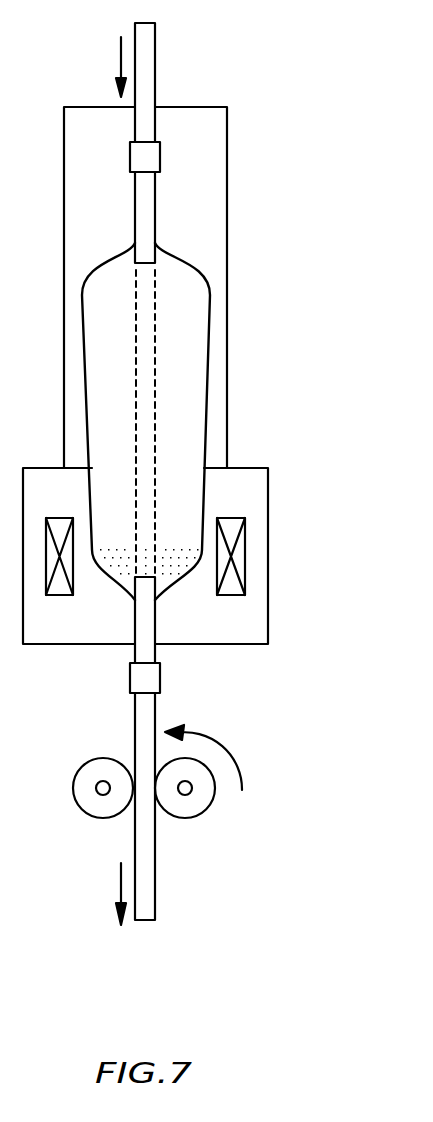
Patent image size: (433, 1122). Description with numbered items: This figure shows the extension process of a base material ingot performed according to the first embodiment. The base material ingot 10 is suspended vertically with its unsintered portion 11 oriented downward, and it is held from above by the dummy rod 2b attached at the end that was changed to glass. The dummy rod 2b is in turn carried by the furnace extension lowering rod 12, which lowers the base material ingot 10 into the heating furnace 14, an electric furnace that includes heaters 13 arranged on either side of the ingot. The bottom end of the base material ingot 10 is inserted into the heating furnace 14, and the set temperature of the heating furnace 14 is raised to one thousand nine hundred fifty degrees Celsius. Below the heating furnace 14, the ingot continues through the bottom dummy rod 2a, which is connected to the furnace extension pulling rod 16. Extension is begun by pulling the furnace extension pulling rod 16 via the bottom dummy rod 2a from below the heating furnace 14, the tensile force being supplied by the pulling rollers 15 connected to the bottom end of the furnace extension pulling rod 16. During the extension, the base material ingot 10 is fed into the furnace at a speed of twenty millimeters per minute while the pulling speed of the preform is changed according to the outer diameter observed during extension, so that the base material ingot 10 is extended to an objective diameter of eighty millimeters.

The furnace extension lowering rod 12 is at (148, 62).
The dummy rod 2b is at (147, 198).
The base material ingot 10 is at (185, 368).
The unsintered portion 11 is at (117, 563).
The heaters 13 is at (245, 555).
The heating furnace 14 is at (255, 620).
The bottom dummy rod 2a is at (145, 623).
The pulling rollers 15 is at (202, 803).
The furnace extension pulling rod 16 is at (143, 910).